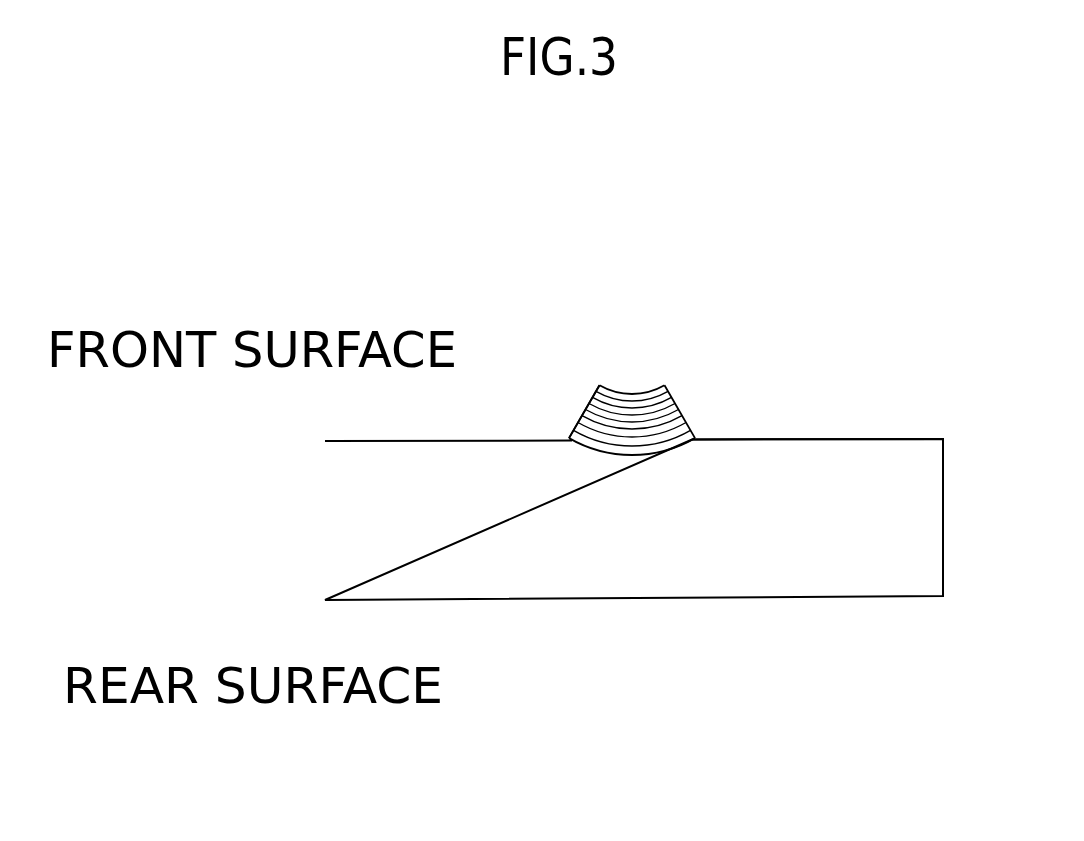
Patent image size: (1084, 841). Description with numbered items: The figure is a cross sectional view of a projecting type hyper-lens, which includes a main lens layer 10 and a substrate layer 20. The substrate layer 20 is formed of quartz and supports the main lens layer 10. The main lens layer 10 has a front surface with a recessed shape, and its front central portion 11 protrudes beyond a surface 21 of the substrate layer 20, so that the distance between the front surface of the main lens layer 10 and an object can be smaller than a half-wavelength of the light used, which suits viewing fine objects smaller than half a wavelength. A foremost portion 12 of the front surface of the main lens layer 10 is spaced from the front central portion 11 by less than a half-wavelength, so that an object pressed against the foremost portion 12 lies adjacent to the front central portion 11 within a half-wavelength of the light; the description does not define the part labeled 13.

The main lens layer 10 is at (645, 417).
The front central portion 11 is at (632, 397).
The foremost portion 12 is at (600, 384).
The side surface of layered structure 13 is at (587, 406).
The substrate layer 20 is at (775, 572).
The surface 21 is at (827, 438).